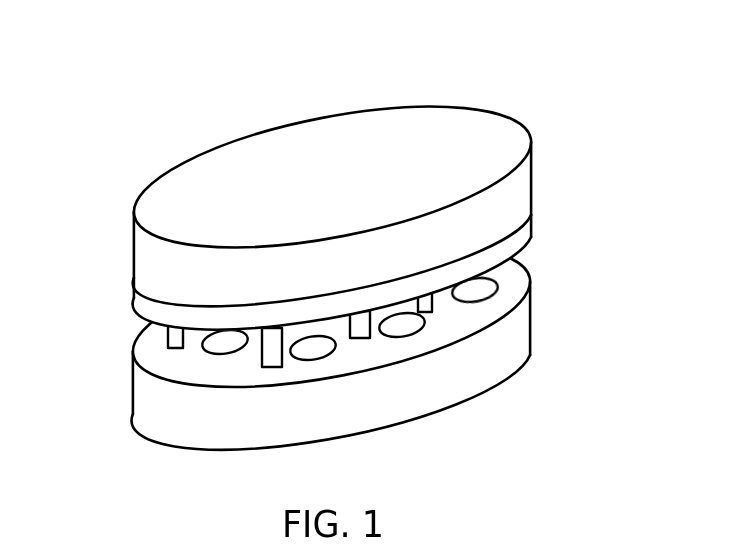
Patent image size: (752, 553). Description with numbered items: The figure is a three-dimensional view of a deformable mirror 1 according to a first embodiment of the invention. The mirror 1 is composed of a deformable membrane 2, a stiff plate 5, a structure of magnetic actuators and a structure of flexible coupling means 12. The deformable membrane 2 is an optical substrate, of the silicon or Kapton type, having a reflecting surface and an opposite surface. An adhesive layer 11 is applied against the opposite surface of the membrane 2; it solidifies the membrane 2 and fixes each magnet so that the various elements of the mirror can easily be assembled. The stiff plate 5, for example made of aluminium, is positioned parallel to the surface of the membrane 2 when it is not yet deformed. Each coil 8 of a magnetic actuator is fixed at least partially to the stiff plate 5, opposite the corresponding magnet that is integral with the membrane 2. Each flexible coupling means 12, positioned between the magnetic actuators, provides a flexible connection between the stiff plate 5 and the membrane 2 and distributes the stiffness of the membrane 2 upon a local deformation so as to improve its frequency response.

The deformable mirror 1 is at (333, 232).
The deformable membrane 2 is at (442, 153).
The adhesive layer 11 is at (510, 243).
The stiff plate 5 is at (498, 358).
The coil 8 is at (483, 283).
The flexible coupling means 12 is at (160, 333).